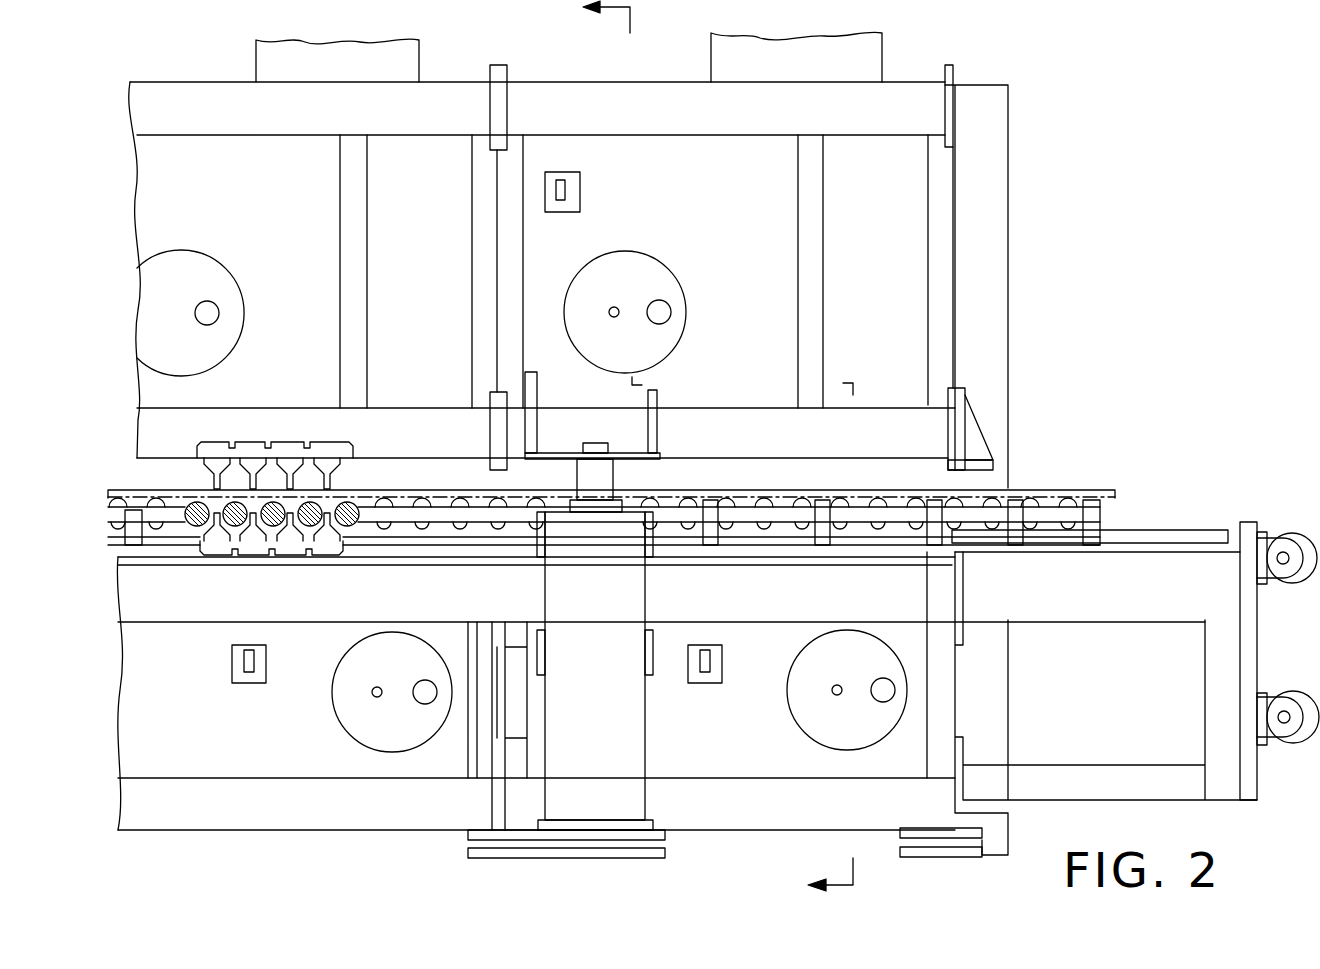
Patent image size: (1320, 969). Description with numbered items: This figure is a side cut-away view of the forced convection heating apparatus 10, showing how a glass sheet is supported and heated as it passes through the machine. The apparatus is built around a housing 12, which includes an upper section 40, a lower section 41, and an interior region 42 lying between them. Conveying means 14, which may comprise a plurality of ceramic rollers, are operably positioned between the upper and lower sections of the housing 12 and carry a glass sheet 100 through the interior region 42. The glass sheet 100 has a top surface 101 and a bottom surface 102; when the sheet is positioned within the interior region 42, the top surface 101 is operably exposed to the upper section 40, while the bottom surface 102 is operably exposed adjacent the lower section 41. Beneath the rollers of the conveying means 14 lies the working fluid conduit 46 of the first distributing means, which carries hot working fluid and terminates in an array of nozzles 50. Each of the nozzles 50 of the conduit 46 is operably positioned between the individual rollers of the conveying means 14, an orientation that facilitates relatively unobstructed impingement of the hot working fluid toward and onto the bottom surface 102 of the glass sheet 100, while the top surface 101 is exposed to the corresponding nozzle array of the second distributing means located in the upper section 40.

The forced convection heating apparatus 10 is at (699, 451).
The housing 12 is at (1016, 260).
The upper section 40 is at (1007, 320).
The glass sheet 100 is at (634, 517).
The top surface 101 is at (418, 490).
The bottom surface 102 is at (445, 520).
The interior region 42 is at (232, 518).
The working fluid conduit 46 is at (208, 550).
The nozzles 50 is at (327, 505).
The conveying means 14 is at (182, 493).
The lower section 41 is at (718, 772).